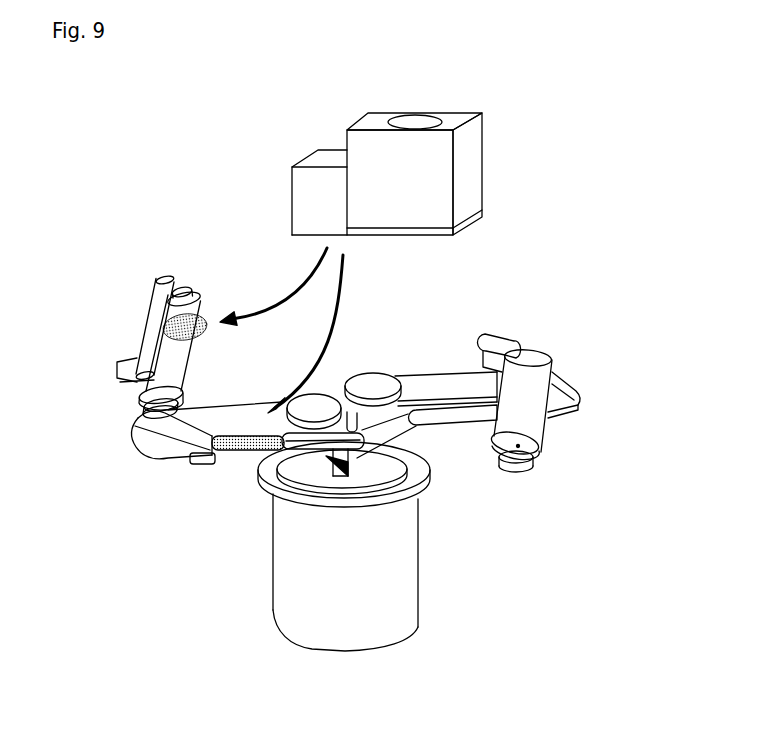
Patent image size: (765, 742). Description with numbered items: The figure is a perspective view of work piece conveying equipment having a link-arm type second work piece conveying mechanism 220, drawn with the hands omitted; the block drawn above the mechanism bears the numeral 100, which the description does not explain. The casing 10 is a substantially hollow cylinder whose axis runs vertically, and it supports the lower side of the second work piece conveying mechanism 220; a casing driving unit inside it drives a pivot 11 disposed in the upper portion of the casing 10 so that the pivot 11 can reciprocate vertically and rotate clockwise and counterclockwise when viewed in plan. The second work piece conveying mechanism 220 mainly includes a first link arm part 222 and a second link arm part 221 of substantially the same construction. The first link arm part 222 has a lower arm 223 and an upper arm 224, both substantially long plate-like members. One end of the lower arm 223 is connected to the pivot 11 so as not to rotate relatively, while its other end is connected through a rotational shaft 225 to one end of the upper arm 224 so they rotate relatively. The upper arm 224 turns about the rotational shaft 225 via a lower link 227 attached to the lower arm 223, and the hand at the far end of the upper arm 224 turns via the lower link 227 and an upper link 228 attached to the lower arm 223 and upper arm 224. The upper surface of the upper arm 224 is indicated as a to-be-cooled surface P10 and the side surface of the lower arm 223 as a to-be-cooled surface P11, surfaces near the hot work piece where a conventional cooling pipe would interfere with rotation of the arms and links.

The control unit 100 is at (431, 81).
The casing 10 is at (278, 648).
The pivot 11 is at (365, 379).
The second work piece conveying mechanism 220 is at (554, 197).
The second link arm part 221 is at (557, 300).
The first link arm part 222 is at (190, 252).
The lower arm 223 is at (233, 410).
The upper arm 224 is at (135, 393).
The rotational shaft 225 is at (141, 413).
The lower link 227 is at (200, 465).
The upper link 228 is at (158, 305).
The to-be-cooled surface P10 is at (206, 312).
The to-be-cooled surface P11 is at (242, 463).